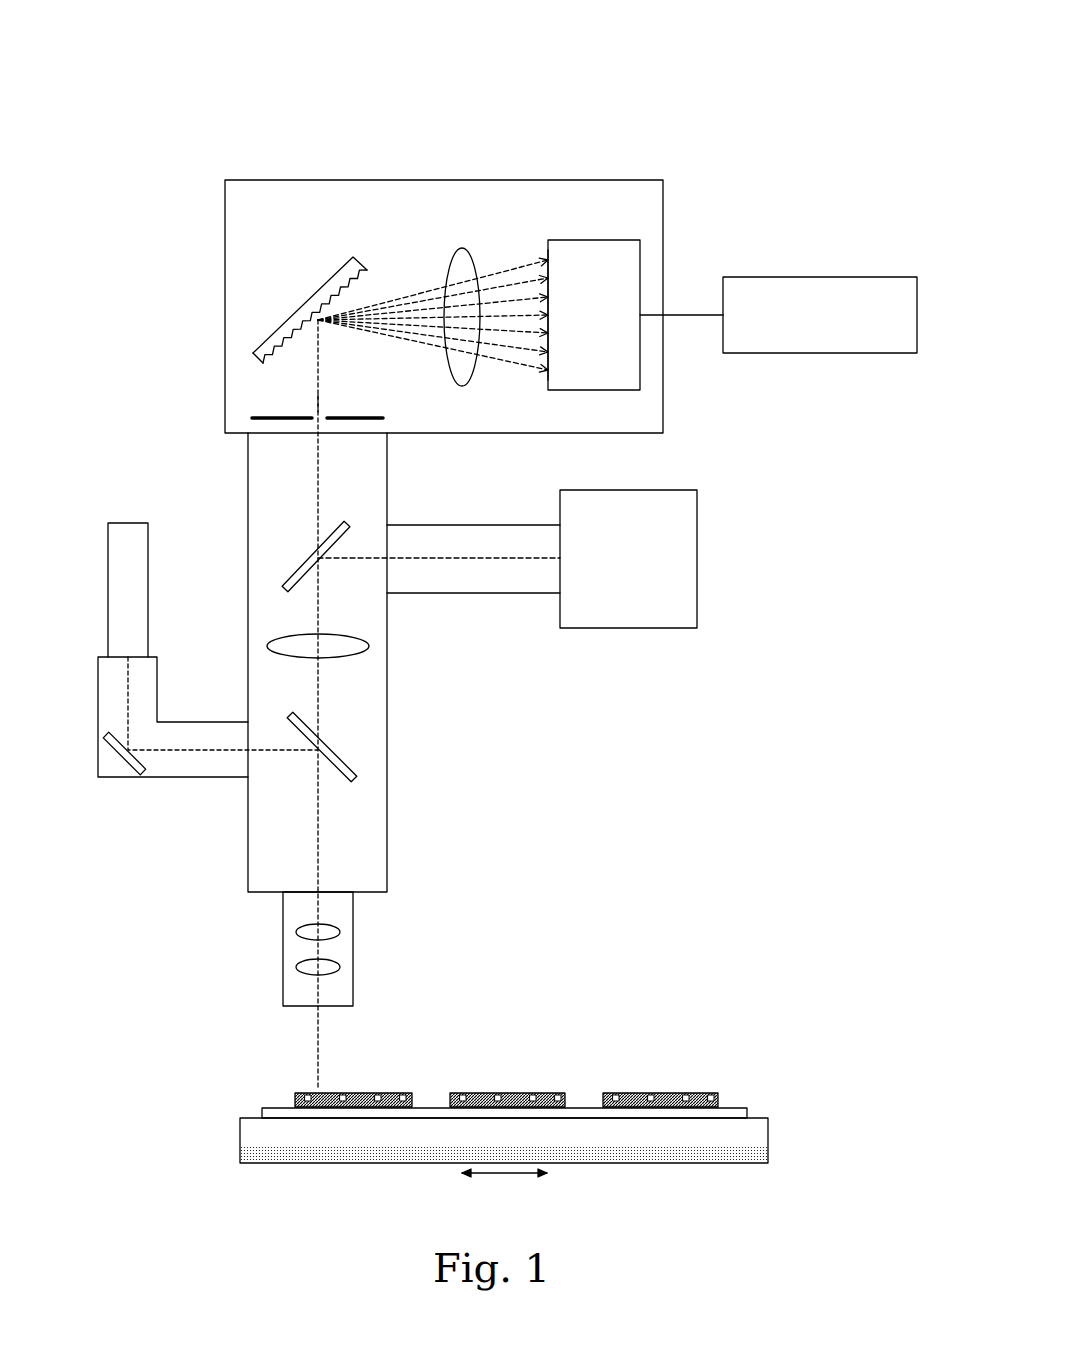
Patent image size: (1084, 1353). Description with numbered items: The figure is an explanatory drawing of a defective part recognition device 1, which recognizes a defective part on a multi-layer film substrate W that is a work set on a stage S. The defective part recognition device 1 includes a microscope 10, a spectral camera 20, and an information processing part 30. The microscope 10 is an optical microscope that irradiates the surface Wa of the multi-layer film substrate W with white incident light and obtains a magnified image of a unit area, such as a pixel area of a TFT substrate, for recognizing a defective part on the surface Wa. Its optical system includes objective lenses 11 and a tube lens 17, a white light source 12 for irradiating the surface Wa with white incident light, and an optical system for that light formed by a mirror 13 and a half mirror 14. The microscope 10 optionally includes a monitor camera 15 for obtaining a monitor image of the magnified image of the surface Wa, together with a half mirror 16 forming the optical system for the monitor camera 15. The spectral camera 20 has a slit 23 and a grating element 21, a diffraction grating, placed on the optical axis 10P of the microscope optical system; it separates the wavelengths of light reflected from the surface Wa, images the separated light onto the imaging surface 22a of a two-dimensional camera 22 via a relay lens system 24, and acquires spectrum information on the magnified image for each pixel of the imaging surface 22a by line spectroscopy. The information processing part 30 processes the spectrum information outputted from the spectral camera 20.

The defective part recognition device 1 is at (773, 117).
The microscope 10 is at (430, 727).
The optical axis 10P is at (318, 403).
The objective lenses 11 is at (342, 968).
The white light source 12 is at (125, 523).
The mirror 13 is at (140, 777).
The half mirror 14 is at (290, 713).
The monitor camera 15 is at (697, 540).
The half mirror 16 is at (350, 522).
The tube lens 17 is at (370, 648).
The spectral camera 20 is at (423, 180).
The grating element 21 is at (353, 257).
The two-dimensional camera 22 is at (598, 240).
The imaging surface 22a is at (548, 258).
The slit 23 is at (252, 418).
The relay lens system 24 is at (462, 387).
The information processing part 30 is at (832, 277).
The multi-layer film substrate W is at (552, 1062).
The surface Wa is at (403, 1093).
The stage S is at (770, 1137).